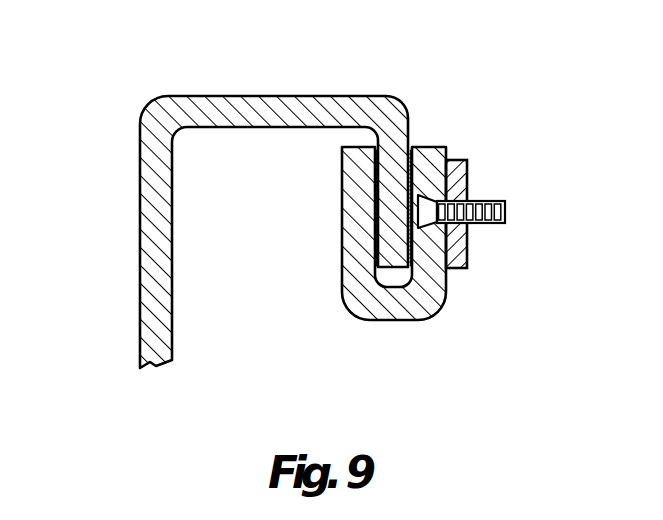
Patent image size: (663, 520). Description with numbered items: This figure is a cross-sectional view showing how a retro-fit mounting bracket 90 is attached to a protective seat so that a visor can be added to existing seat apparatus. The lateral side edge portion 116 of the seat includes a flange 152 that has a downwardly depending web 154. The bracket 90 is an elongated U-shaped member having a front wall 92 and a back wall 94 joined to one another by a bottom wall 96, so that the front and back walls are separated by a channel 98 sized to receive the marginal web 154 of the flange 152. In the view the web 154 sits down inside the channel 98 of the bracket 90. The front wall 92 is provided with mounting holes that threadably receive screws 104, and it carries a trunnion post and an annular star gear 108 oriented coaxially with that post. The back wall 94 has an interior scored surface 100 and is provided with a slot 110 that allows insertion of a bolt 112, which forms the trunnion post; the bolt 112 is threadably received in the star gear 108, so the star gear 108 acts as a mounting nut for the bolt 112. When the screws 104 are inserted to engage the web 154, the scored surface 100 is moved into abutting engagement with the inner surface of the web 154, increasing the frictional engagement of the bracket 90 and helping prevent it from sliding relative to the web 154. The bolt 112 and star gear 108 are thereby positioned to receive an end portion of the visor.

The bracket 90 is at (228, 348).
The front wall 92 is at (468, 268).
The back wall 94 is at (345, 259).
The bottom wall 96 is at (383, 288).
The channel 98 is at (381, 292).
The scored surface 100 is at (430, 311).
The screws 104 is at (448, 163).
The star gear 108 is at (468, 240).
The slot 110 is at (342, 196).
The bolt 112 is at (484, 200).
The lateral side edge portion 116 is at (160, 96).
The flange 152 is at (275, 97).
The web 154 is at (392, 160).